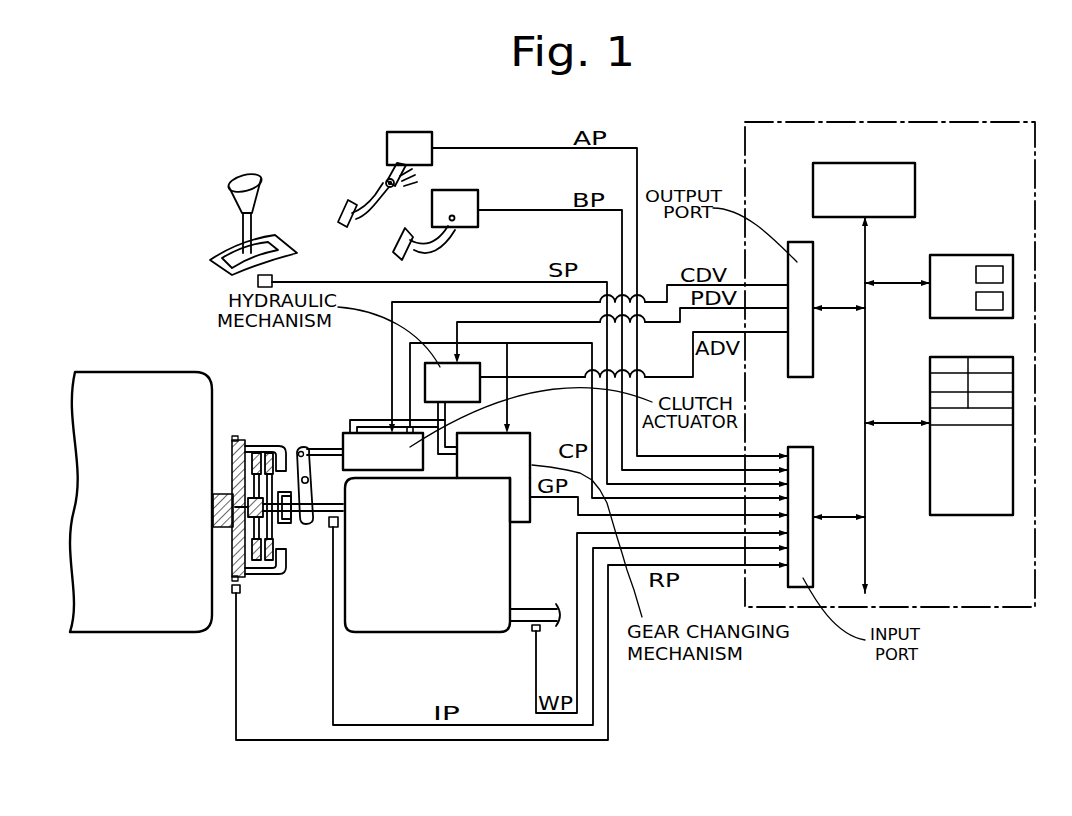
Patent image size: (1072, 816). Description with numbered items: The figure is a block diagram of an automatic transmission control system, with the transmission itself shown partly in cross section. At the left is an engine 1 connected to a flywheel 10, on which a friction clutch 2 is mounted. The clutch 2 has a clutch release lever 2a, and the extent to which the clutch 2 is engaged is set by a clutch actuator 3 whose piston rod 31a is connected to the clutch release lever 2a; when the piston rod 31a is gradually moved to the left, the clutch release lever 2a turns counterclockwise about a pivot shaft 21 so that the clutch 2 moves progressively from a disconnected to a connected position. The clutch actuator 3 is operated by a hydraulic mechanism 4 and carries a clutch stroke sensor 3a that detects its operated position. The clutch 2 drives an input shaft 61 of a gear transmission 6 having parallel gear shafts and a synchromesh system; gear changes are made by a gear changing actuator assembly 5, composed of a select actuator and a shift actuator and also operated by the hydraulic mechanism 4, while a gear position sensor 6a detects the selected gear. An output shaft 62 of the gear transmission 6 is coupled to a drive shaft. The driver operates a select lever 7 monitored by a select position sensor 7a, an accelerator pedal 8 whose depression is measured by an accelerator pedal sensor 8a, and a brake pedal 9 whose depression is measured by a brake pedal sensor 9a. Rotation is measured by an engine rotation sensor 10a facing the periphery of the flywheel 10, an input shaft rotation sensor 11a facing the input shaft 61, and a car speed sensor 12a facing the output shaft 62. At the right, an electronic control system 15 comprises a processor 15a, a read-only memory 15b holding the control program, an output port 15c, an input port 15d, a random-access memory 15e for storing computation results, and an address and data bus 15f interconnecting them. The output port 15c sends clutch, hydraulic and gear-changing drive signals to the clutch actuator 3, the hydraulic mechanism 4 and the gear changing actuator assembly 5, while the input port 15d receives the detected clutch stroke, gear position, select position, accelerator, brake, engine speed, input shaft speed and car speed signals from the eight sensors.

The engine 1 is at (186, 371).
The clutch 2 is at (266, 424).
The clutch release lever 2a is at (300, 446).
The clutch actuator 3 is at (372, 440).
The clutch stroke sensor 3a is at (410, 427).
The hydraulic mechanism 4 is at (473, 380).
The gear changing actuator assembly 5 is at (518, 448).
The gear transmission 6 is at (443, 622).
The gear position sensor 6a is at (522, 518).
The select lever 7 is at (253, 223).
The select position sensor 7a is at (275, 276).
The accelerator pedal 8 is at (343, 200).
The accelerator pedal sensor 8a is at (410, 143).
The brake pedal 9 is at (397, 238).
The brake pedal sensor 9a is at (473, 200).
The flywheel 10 is at (235, 437).
The engine rotation sensor 10a is at (232, 594).
The input shaft rotation sensor 11a is at (333, 528).
The car speed sensor 12a is at (537, 632).
The electronic control system 15 is at (1003, 137).
The processor 15a is at (913, 188).
The read-only memory (ROM) 15b is at (970, 267).
The output port 15c is at (802, 378).
The input port 15d is at (808, 472).
The random-access memory (RAM) 15e is at (990, 516).
The address and data bus (BUS) 15f is at (866, 548).
The pivot shaft 21 is at (309, 480).
The piston rod 31a is at (323, 447).
The input shaft 61 is at (322, 513).
The output shaft 62 is at (520, 623).